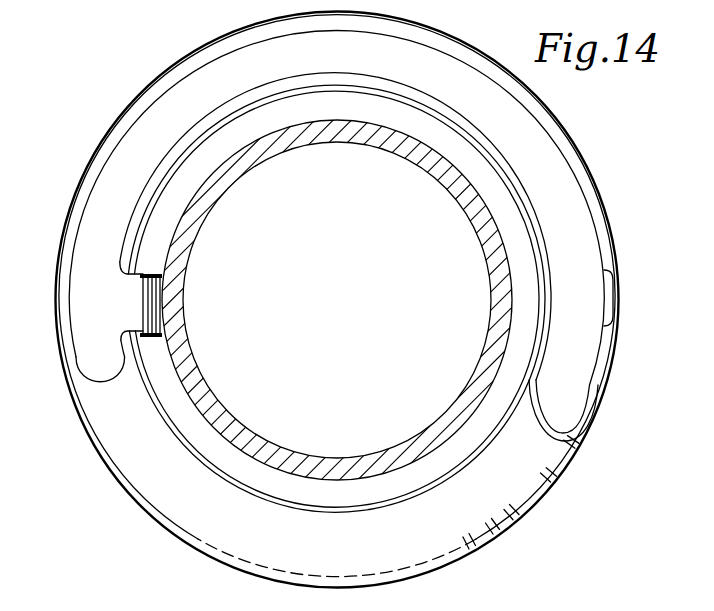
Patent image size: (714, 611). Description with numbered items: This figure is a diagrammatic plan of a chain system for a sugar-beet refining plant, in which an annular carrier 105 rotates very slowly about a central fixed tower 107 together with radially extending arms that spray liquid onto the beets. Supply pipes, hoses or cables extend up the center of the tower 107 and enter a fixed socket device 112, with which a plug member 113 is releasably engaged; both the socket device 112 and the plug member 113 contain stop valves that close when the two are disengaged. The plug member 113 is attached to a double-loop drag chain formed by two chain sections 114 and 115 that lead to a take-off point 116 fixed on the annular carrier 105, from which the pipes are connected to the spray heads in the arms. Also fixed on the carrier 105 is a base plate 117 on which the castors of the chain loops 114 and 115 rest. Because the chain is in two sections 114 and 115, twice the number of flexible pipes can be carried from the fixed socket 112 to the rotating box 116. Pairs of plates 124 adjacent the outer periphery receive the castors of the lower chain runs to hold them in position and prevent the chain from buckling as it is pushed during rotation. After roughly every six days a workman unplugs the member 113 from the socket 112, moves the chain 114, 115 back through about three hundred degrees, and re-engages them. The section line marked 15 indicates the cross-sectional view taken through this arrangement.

The annular carrier 105 is at (585, 432).
The central fixed tower 107 is at (224, 194).
The fixed socket device 112 is at (148, 300).
The plug member 113 is at (132, 307).
The chain loop 114 is at (263, 91).
The chain loop 115 is at (191, 64).
The take-off point 116 is at (603, 294).
The base plate 117 is at (481, 507).
The pairs of plates 124 is at (525, 462).
The section line 15- 15 is at (52, 304).